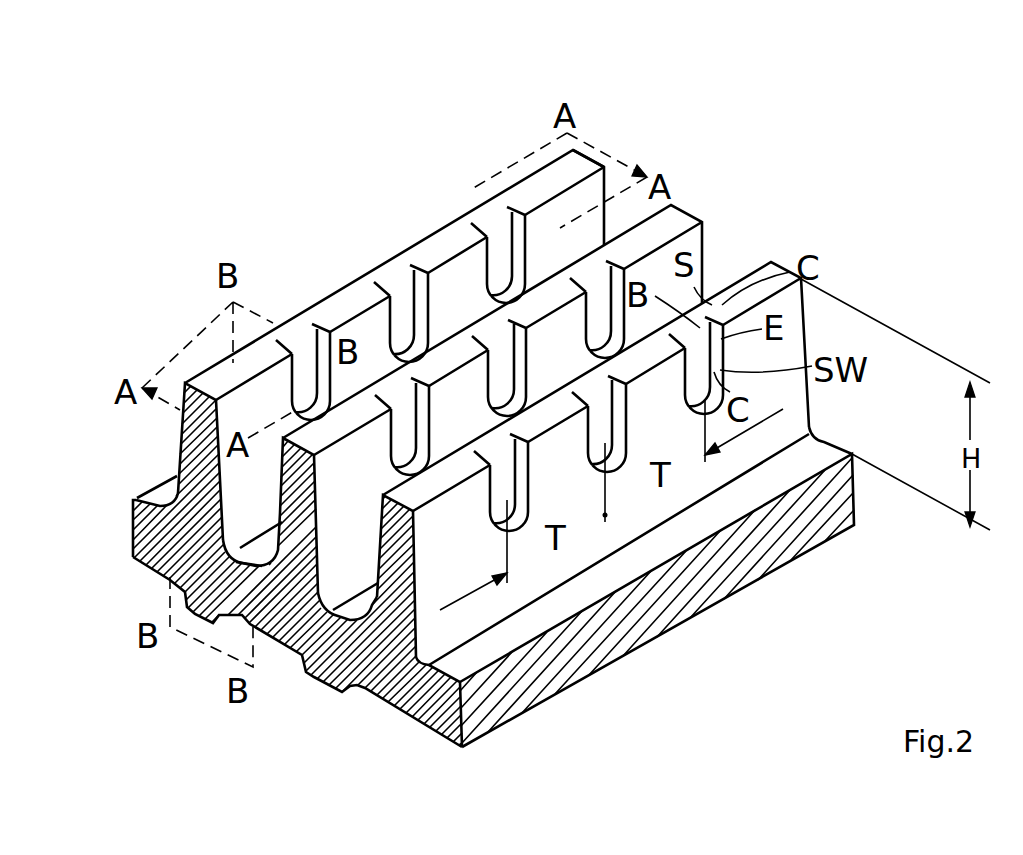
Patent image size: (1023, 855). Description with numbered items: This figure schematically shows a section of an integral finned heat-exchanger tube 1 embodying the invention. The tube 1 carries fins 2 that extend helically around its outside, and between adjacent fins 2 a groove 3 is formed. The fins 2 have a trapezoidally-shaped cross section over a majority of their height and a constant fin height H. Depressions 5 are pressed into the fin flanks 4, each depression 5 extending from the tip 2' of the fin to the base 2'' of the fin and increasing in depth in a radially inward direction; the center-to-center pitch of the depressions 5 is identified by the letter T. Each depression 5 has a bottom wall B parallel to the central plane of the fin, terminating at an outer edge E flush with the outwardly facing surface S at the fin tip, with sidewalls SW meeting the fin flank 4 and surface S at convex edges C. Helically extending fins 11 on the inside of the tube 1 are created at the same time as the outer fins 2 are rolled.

The integral finned tube 1 is at (705, 224).
The fins 2 is at (372, 371).
The tip of the fin 2' is at (563, 114).
The base of the fin 2'' is at (656, 459).
The groove 3 is at (263, 548).
The fin flanks 4 is at (783, 357).
The depressions 5 is at (392, 292).
The helically extending fins on the inside of the tube 11 is at (308, 680).